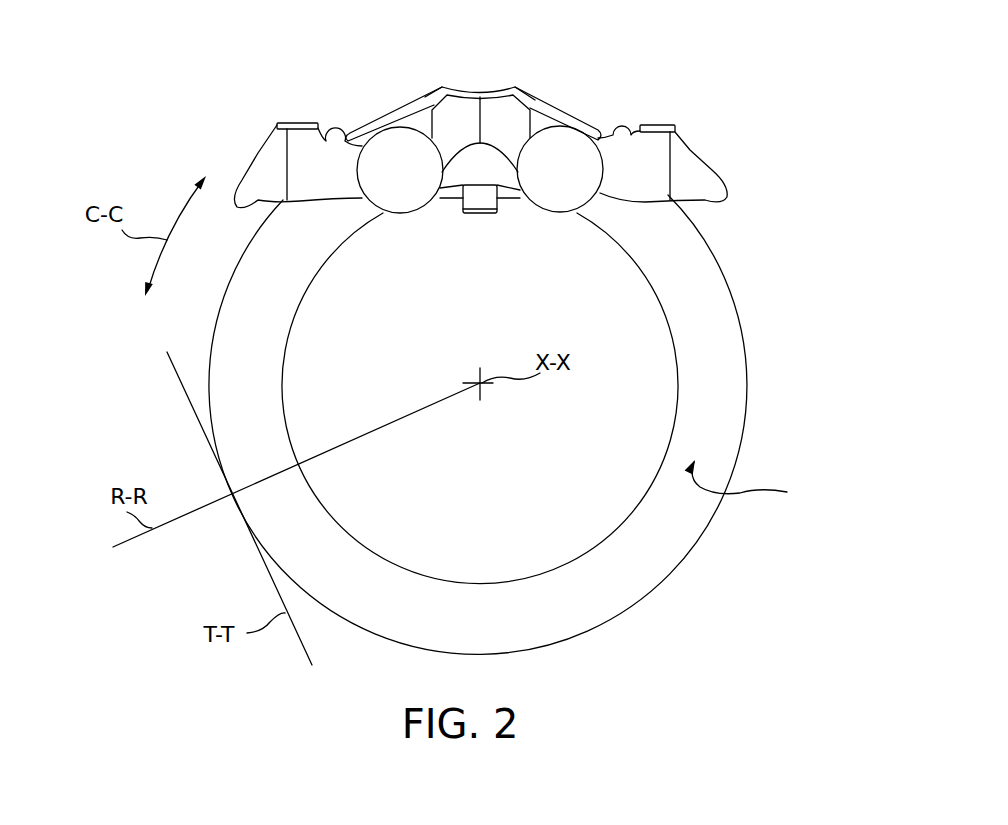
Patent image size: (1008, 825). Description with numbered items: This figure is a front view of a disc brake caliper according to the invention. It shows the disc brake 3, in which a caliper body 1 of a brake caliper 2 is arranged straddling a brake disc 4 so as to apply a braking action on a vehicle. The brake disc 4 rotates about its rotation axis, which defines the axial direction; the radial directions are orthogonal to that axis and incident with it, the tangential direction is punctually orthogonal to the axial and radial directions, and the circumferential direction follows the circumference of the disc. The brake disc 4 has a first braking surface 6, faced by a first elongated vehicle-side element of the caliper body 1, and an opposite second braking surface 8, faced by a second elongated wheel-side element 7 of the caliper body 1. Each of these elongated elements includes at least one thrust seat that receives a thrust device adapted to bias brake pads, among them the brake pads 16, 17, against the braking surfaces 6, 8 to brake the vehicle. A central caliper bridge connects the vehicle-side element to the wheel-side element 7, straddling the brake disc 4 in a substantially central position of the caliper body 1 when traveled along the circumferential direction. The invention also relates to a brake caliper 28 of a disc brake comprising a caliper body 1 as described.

The caliper body 1 is at (549, 121).
The brake caliper 2 is at (312, 165).
The disc brake 3 is at (721, 121).
The brake disc 4 is at (713, 349).
The first braking surface 6 is at (752, 396).
The second elongated wheel-side element 7 is at (650, 173).
The second braking surface 8 is at (748, 483).
The brake pad 16 is at (378, 128).
The brake pad 17 is at (582, 130).
The brake caliper 28 is at (676, 127).